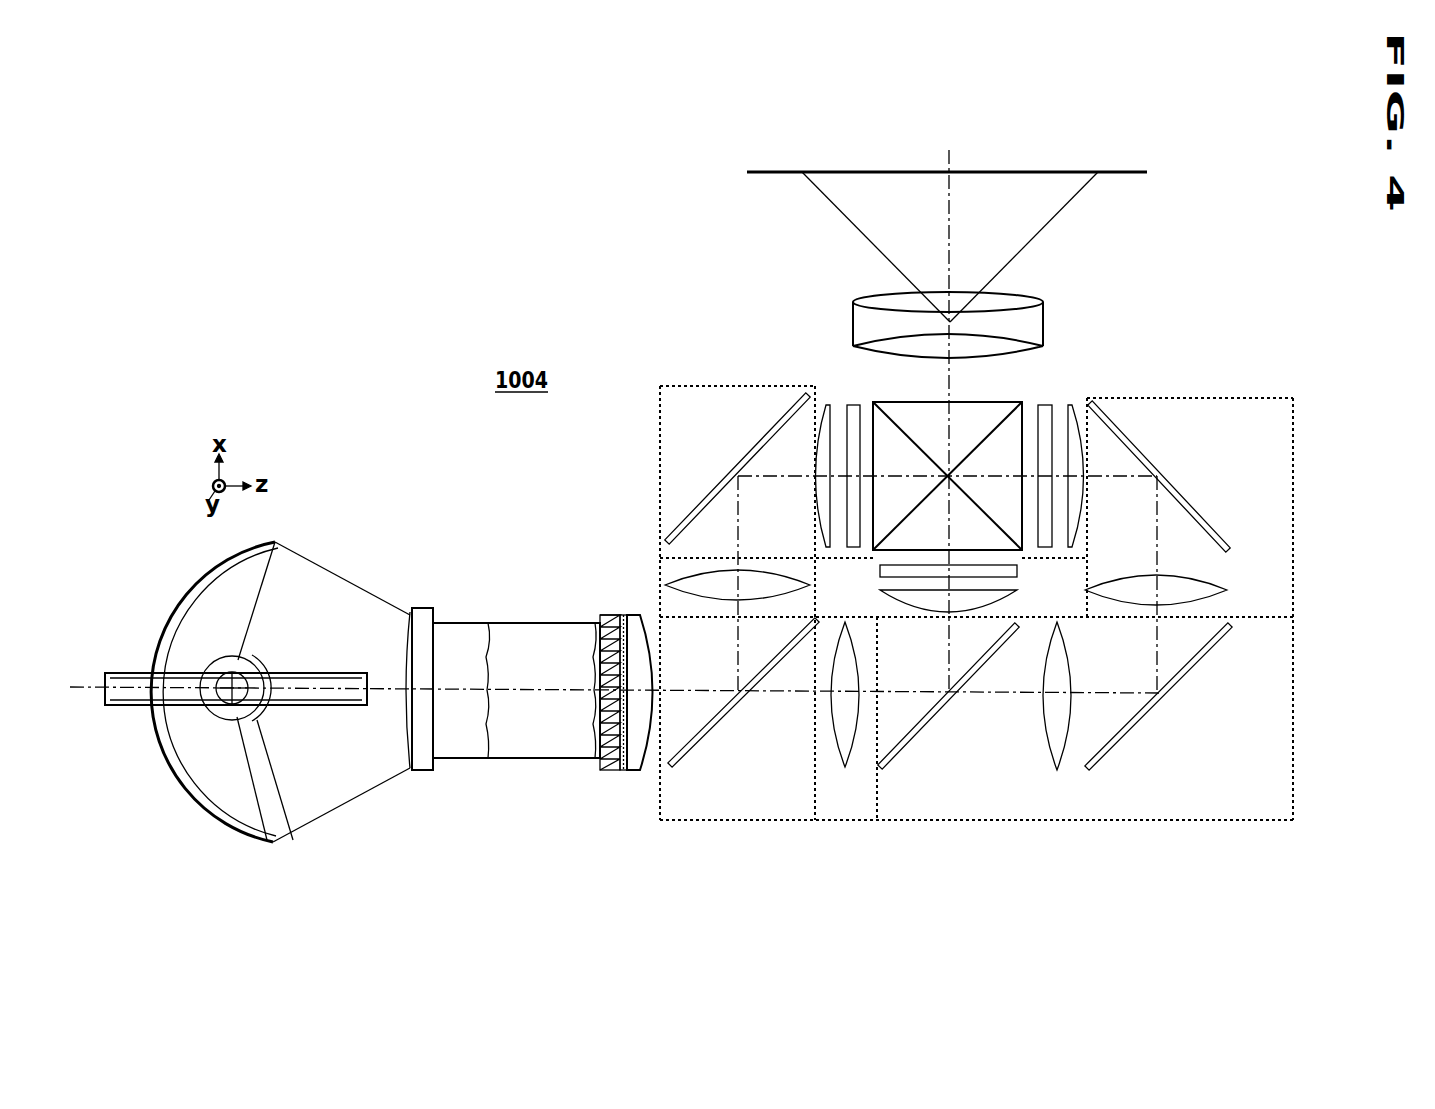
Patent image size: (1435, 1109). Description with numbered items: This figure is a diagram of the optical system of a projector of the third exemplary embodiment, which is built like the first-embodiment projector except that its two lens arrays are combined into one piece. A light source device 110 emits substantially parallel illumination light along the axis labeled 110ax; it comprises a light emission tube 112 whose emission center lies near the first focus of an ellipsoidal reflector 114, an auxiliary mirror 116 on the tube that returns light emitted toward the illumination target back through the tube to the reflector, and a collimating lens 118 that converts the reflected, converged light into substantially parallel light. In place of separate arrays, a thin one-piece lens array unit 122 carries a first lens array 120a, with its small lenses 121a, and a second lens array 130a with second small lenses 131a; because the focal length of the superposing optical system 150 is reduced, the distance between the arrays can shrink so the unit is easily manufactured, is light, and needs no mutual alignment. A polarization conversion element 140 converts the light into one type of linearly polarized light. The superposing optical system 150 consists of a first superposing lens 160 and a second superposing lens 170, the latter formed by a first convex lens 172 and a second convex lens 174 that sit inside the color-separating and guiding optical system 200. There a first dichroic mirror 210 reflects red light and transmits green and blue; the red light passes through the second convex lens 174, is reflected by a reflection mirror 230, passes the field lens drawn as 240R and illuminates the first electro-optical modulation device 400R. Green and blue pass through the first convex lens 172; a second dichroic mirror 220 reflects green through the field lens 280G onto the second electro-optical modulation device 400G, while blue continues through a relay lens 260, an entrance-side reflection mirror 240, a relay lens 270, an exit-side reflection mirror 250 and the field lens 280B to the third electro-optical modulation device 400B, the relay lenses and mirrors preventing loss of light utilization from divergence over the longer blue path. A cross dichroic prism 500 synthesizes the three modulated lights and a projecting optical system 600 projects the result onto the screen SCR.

The light source device 110 is at (258, 729).
The illumination optical axis 110ax is at (90, 687).
The light emission tube 112 is at (262, 735).
The ellipsoidal reflector 114 is at (208, 807).
The auxiliary mirror 116 is at (305, 820).
The collimating lens 118 is at (420, 773).
The first lens array 120a is at (475, 630).
The light incident end 121a is at (483, 760).
The lens array unit 122 is at (516, 716).
The second lens array 130a is at (598, 618).
The second small lenses 131a is at (600, 768).
The polarization conversion element 140 is at (625, 618).
The superposing optical system 150 is at (960, 655).
The first superposing lens 160 is at (960, 634).
The second superposing lens 170 is at (841, 750).
The first convex lens 172 is at (851, 717).
The second convex lens 174 is at (810, 585).
The color-separating and guiding optical system 200 is at (1002, 587).
The first dichroic mirror 210 is at (692, 750).
The second dichroic mirror 220 is at (903, 753).
The reflection mirror 230 is at (705, 495).
The entrance-side reflection mirror 240 is at (1117, 747).
The exit-side reflection mirror 250 is at (1203, 513).
The relay lens 260 is at (1057, 770).
The relay lens 270 is at (1228, 590).
The field lens (red) 240R is at (815, 402).
The field lens 280B is at (1075, 403).
The field lens 280G is at (1017, 602).
The first electro-optical modulation device 400R is at (850, 403).
The second electro-optical modulation device 400G is at (1047, 580).
The third electro-optical modulation device 400B is at (1045, 403).
The cross dichroic prism 500 is at (883, 400).
The projecting optical system 600 is at (1045, 323).
The screen SCR is at (782, 175).